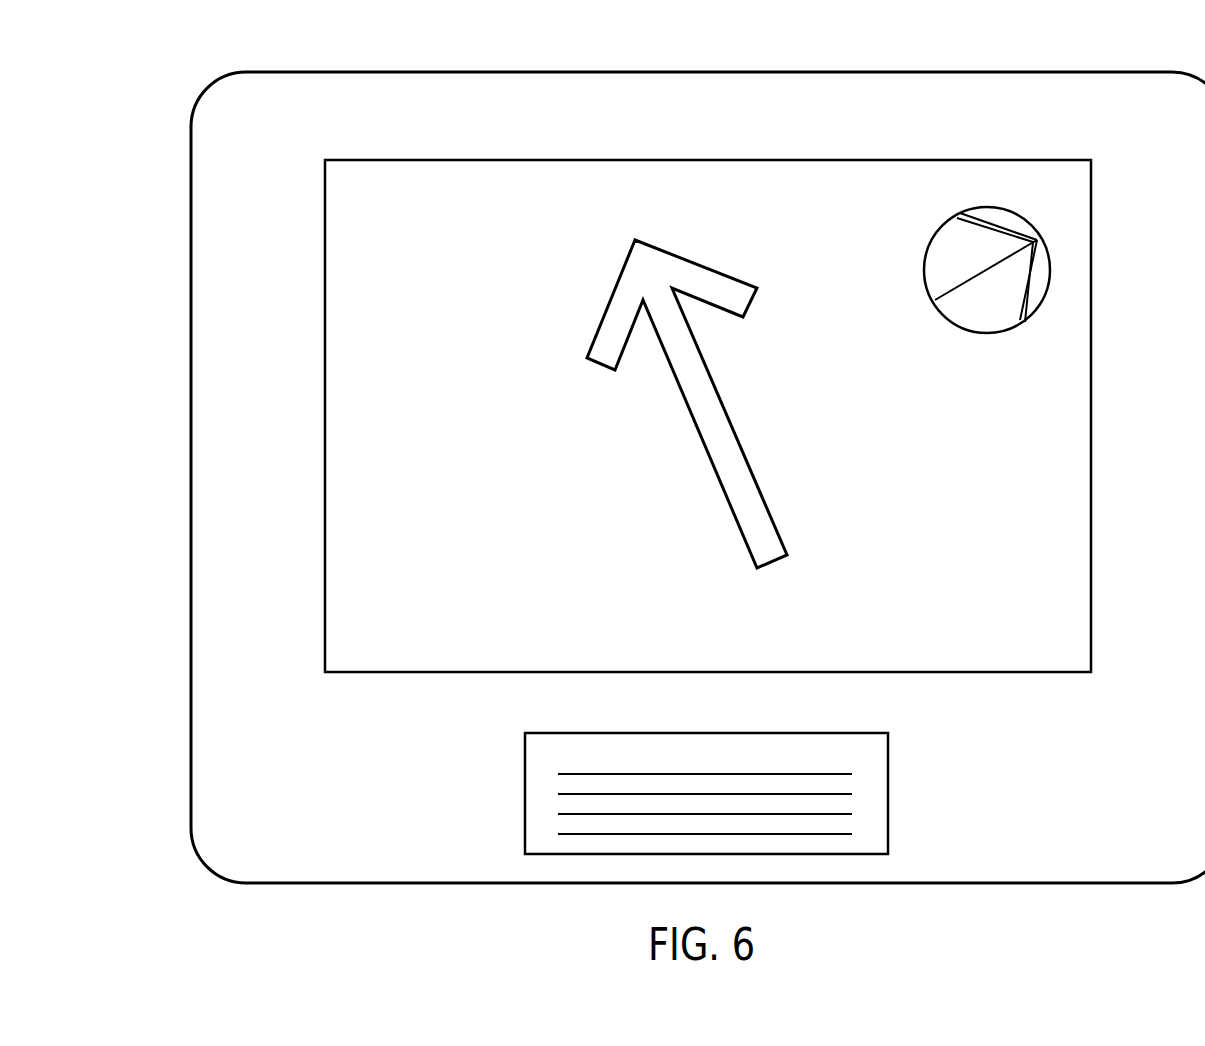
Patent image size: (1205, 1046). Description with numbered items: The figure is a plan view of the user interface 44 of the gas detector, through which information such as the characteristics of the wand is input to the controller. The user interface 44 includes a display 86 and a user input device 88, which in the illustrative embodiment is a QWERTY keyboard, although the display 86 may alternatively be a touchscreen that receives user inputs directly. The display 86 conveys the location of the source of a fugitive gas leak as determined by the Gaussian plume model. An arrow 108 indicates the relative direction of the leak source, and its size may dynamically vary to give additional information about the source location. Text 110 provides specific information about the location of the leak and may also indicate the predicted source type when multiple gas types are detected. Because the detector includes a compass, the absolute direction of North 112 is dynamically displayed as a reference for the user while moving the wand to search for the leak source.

The user interface 44 is at (134, 118).
The display 86 is at (324, 440).
The user input device 88 is at (525, 790).
The arrow 108 is at (603, 313).
The text 110 is at (588, 445).
The absolute direction of North 112 is at (1070, 290).